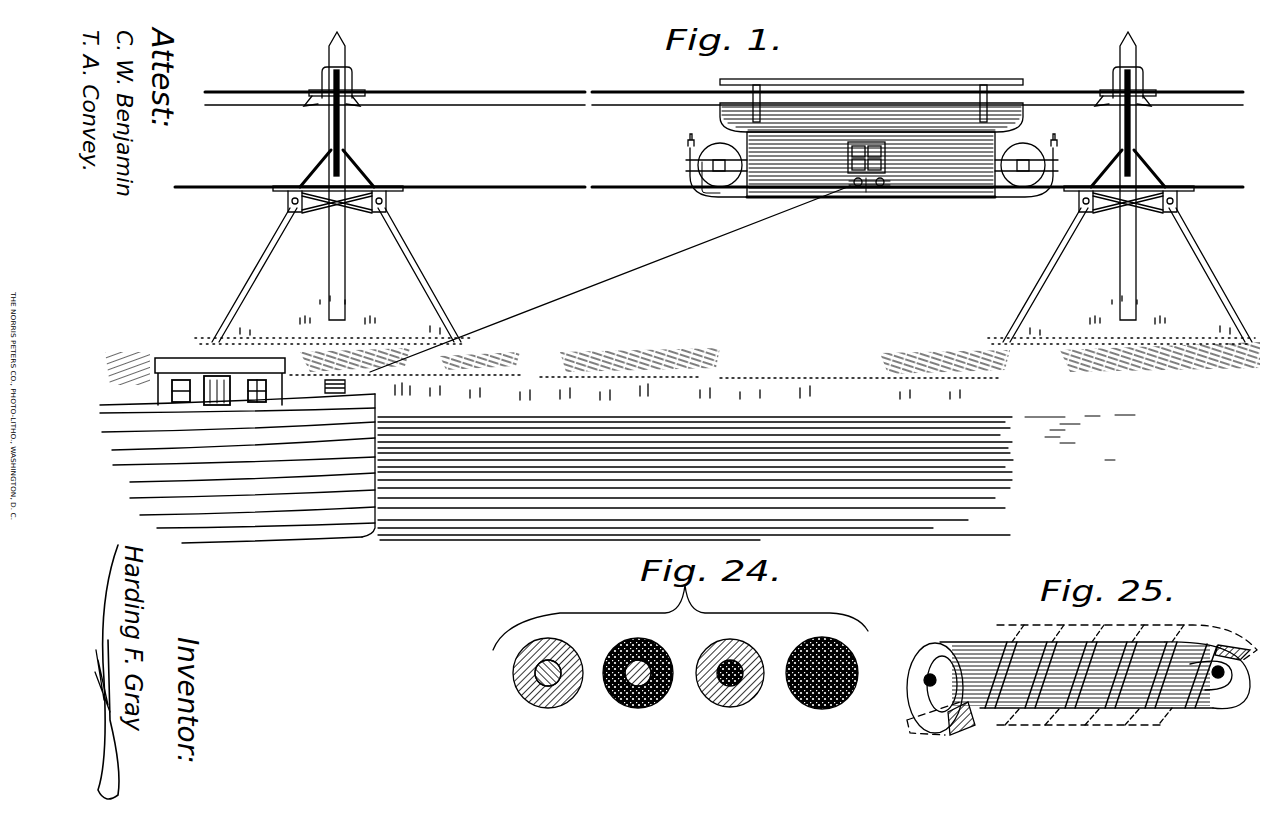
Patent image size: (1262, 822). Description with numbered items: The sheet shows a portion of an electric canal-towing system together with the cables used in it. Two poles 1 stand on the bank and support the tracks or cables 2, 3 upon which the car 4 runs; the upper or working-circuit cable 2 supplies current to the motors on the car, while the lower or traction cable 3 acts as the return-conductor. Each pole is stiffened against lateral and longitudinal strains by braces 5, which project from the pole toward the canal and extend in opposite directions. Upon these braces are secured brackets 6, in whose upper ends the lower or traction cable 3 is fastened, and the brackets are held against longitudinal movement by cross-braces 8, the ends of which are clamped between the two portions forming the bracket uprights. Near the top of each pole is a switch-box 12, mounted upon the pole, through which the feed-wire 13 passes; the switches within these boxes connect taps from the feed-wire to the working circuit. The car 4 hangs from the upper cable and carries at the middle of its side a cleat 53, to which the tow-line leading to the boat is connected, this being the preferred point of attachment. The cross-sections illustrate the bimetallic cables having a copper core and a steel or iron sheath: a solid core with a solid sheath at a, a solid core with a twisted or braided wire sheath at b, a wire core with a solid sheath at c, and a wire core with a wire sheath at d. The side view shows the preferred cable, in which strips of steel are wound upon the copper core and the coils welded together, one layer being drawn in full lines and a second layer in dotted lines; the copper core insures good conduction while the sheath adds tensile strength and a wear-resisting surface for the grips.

In FIG. 1, the pole 1 is at (732, 176).
In FIG. 1, the upper or working-circuit cable 2 is at (724, 81).
In FIG. 1, the feed-wire 13 is at (724, 116).
In FIG. 1, the lower or traction cable 3 is at (709, 175).
In FIG. 1, the car 4 is at (928, 203).
In FIG. 1, the brace 5 is at (1220, 238).
In FIG. 1, the bracket 6 is at (1187, 204).
In FIG. 1, the cross-brace 8 is at (732, 212).
In FIG. 1, the switch-box 12 is at (1151, 72).
In FIG. 1, the cleat 53 is at (862, 196).
In FIG. 24, the cable with solid core and solid sheath a is at (540, 702).
In FIG. 24, the cable with solid core and twisted or braided wire sheath b is at (629, 705).
In FIG. 24, the cable with wire core and solid sheath c is at (727, 704).
In FIG. 24, the cable with wire core and wire sheath d is at (812, 705).